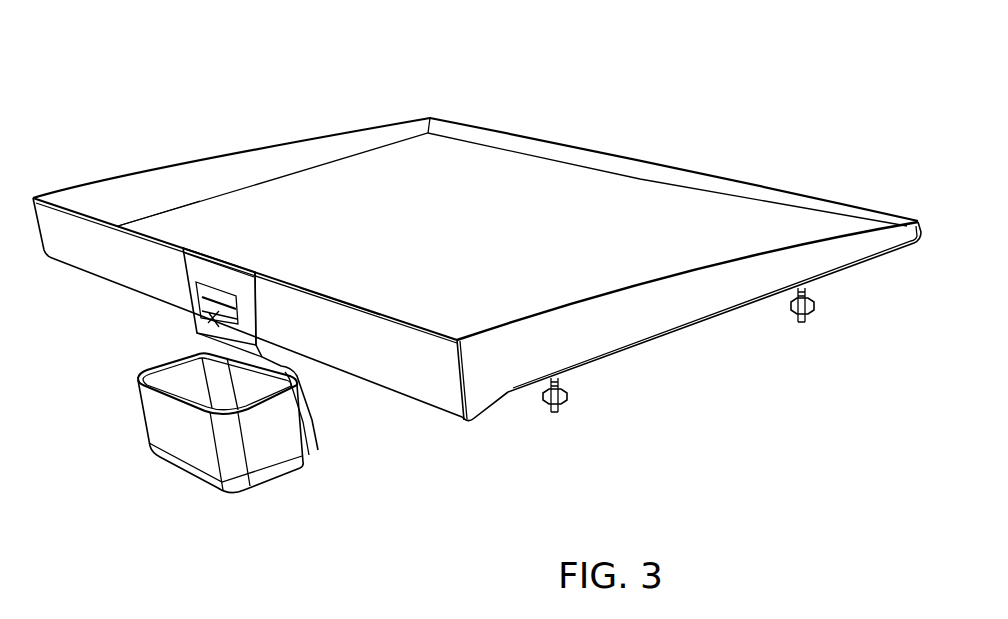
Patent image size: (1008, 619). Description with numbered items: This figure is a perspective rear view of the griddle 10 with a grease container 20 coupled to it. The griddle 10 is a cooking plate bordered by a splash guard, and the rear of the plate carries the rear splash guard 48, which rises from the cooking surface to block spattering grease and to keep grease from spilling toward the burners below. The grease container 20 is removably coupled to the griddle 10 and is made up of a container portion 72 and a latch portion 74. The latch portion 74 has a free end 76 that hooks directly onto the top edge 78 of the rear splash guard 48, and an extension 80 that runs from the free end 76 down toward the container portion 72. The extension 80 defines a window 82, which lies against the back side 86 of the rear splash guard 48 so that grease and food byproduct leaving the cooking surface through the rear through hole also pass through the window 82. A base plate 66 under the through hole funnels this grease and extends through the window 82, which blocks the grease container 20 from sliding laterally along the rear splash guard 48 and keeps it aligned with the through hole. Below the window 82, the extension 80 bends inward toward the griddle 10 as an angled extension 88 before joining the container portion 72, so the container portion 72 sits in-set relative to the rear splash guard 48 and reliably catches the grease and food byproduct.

The griddle 10 is at (266, 58).
The grease container 20 is at (175, 449).
The rear splash guard 48 is at (423, 372).
The base plate 66 is at (195, 332).
The container portion 72 is at (255, 467).
The latch portion 74 is at (178, 284).
The free end 76 is at (254, 275).
The top edge 78 is at (332, 292).
The extension 80 is at (258, 318).
The window 82 is at (204, 282).
The back side 86 is at (135, 253).
The angled extension 88 is at (318, 450).